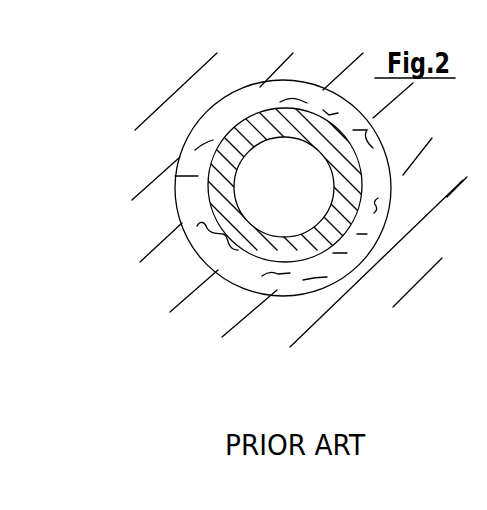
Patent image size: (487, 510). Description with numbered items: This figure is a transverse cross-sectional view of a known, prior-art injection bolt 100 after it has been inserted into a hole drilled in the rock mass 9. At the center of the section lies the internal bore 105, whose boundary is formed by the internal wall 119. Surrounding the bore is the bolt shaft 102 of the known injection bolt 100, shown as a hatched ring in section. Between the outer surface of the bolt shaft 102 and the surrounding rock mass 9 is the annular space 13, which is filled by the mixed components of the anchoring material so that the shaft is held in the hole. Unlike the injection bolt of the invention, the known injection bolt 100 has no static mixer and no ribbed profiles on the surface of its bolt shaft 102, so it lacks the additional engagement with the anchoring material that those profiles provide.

The rock mass 9 is at (157, 200).
The known injection bolt 100 is at (231, 142).
The annular space 13 is at (238, 268).
The bolt shaft 102 is at (327, 232).
The internal wall 119 is at (276, 232).
The internal bore 105 is at (322, 177).